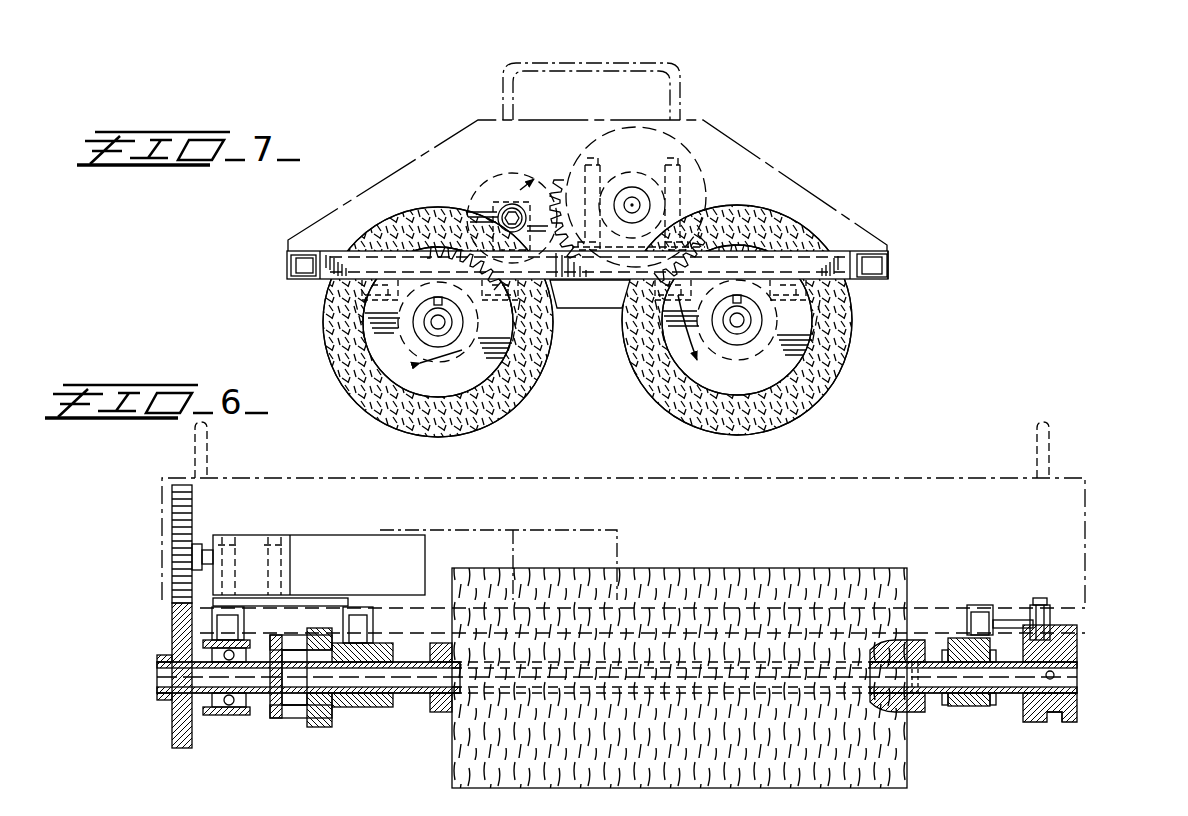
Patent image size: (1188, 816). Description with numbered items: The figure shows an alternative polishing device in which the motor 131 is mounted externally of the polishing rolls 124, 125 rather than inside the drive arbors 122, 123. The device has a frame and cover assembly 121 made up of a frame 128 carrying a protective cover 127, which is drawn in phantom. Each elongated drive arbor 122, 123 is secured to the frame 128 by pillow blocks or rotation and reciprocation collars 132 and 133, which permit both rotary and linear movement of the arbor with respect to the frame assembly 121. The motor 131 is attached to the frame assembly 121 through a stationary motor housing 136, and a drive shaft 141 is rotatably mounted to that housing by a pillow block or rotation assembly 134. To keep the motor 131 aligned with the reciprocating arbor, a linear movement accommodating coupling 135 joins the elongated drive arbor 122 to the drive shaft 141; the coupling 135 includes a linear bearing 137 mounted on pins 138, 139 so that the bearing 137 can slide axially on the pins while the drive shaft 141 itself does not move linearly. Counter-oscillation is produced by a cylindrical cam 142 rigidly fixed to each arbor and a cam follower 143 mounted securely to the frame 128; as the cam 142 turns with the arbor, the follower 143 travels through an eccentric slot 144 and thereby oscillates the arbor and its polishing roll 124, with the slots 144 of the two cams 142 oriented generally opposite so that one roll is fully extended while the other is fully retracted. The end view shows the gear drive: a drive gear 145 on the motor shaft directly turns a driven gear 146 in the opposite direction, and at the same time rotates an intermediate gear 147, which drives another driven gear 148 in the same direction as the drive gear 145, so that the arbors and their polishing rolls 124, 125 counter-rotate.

In FIG. 7, the frame and cover assembly 121 is at (893, 258).
In FIG. 7, the elongated drive arbor 122 is at (738, 335).
In FIG. 6, the elongated drive arbor 122 is at (1008, 690).
In FIG. 7, the elongated drive arbor 123 is at (426, 327).
In FIG. 7, the polishing roll 124 is at (845, 325).
In FIG. 6, the polishing roll 124 is at (903, 758).
In FIG. 7, the polishing roll 125 is at (330, 314).
In FIG. 7, the protective cover 127 is at (752, 148).
In FIG. 6, the protective cover 127 is at (1085, 530).
In FIG. 7, the frame 128 is at (845, 252).
In FIG. 6, the frame 128 is at (920, 610).
In FIG. 7, the motor 131 is at (636, 175).
In FIG. 6, the motor 131 is at (388, 568).
In FIG. 6, the rotation and reciprocation collar 132 is at (955, 636).
In FIG. 6, the rotation and reciprocation collar 133 is at (385, 708).
In FIG. 6, the pillow block 134 is at (228, 716).
In FIG. 6, the coupling 135 is at (292, 716).
In FIG. 6, the stationary motor housing 136 is at (305, 608).
In FIG. 6, the linear bearing 137 is at (325, 718).
In FIG. 6, the pin 138 is at (272, 720).
In FIG. 6, the pin 139 is at (286, 648).
In FIG. 7, the drive shaft 141 is at (745, 298).
In FIG. 6, the drive shaft 141 is at (145, 676).
In FIG. 6, the cylindrical cam 142 is at (1075, 652).
In FIG. 6, the cam follower 143 is at (1052, 630).
In FIG. 6, the eccentric slot 144 is at (1062, 723).
In FIG. 7, the drive gear 145 is at (700, 205).
In FIG. 6, the drive gear 145 is at (172, 512).
In FIG. 7, the driven gear 146 is at (464, 268).
In FIG. 6, the driven gear 146 is at (176, 745).
In FIG. 7, the intermediate gear 147 is at (508, 178).
In FIG. 7, the driven gear 148 is at (512, 325).